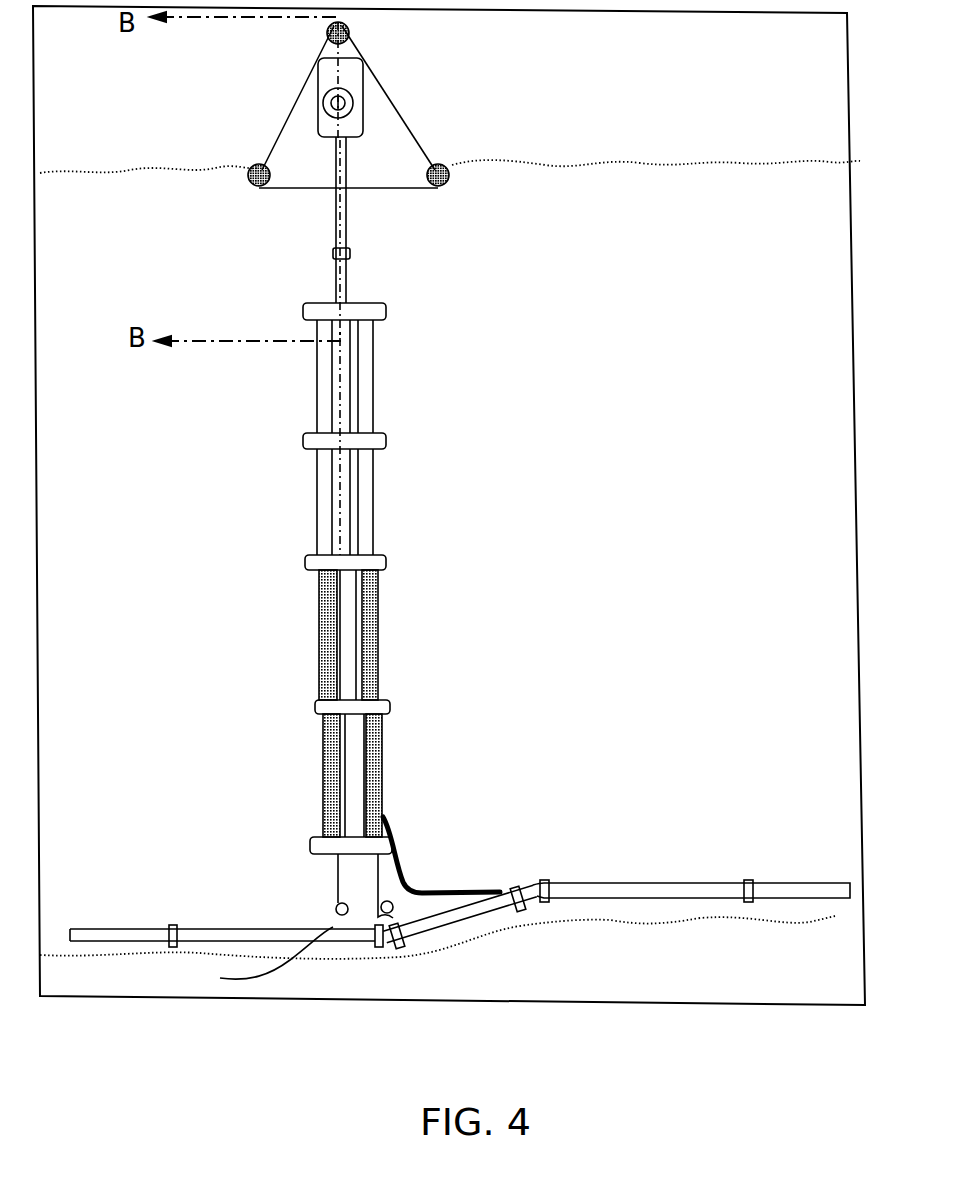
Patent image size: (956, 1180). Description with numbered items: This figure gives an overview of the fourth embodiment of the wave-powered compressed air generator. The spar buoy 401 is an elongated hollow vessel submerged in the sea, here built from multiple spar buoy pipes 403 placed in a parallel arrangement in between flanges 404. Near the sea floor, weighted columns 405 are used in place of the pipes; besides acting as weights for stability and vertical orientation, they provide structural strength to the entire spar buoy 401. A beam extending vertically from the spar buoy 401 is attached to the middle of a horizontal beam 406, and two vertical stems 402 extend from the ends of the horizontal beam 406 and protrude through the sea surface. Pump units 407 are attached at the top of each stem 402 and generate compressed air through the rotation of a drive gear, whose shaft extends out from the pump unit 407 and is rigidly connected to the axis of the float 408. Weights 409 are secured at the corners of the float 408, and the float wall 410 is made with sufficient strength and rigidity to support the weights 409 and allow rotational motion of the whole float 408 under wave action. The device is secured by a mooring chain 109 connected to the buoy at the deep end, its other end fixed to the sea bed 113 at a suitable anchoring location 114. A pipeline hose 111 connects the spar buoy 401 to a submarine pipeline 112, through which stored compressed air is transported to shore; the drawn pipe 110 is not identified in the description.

The spar buoy 401 is at (316, 437).
The stem 402 is at (336, 160).
The spar buoy pipes 403 is at (370, 397).
The flanges 404 is at (386, 310).
The weighted columns 405 is at (325, 660).
The horizontal beam 406 is at (351, 253).
The pump unit 407 is at (318, 76).
The float 408 is at (348, 107).
The weights 409 is at (350, 32).
The float wall 410 is at (400, 82).
The mooring chain 109 is at (320, 835).
The pipeline 110 is at (335, 905).
The pipeline hose 111 is at (441, 852).
The submarine pipeline 112 is at (645, 883).
The sea bed 113 is at (395, 919).
The anchoring location 114 is at (437, 937).